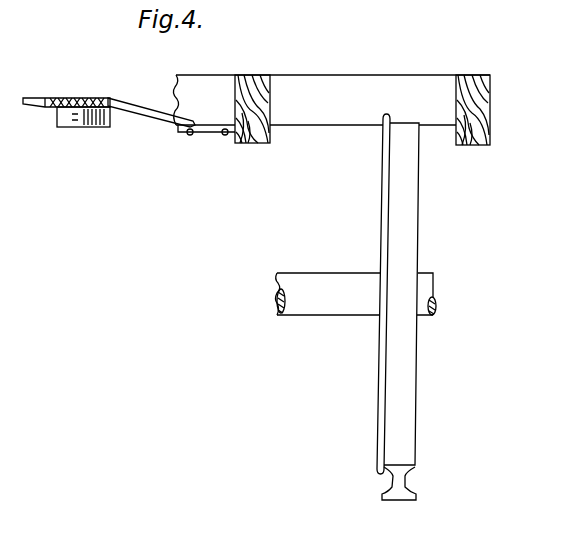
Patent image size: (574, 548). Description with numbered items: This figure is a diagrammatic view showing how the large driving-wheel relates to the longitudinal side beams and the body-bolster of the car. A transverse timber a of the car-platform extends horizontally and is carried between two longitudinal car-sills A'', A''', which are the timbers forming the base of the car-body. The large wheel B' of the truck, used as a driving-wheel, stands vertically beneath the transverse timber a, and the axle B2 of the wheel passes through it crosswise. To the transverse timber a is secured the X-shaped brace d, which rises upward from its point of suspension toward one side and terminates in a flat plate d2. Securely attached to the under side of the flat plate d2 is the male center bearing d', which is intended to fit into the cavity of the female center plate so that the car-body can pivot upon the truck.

The transverse timber a is at (331, 100).
The longitudinal car-sill A'' is at (271, 109).
The longitudinal car-sill A''' is at (487, 110).
The X-shaped brace d is at (151, 99).
The flat plate d2 is at (106, 95).
The male center bearing d' is at (83, 125).
The large wheel B' is at (398, 307).
The axle B2 is at (356, 294).